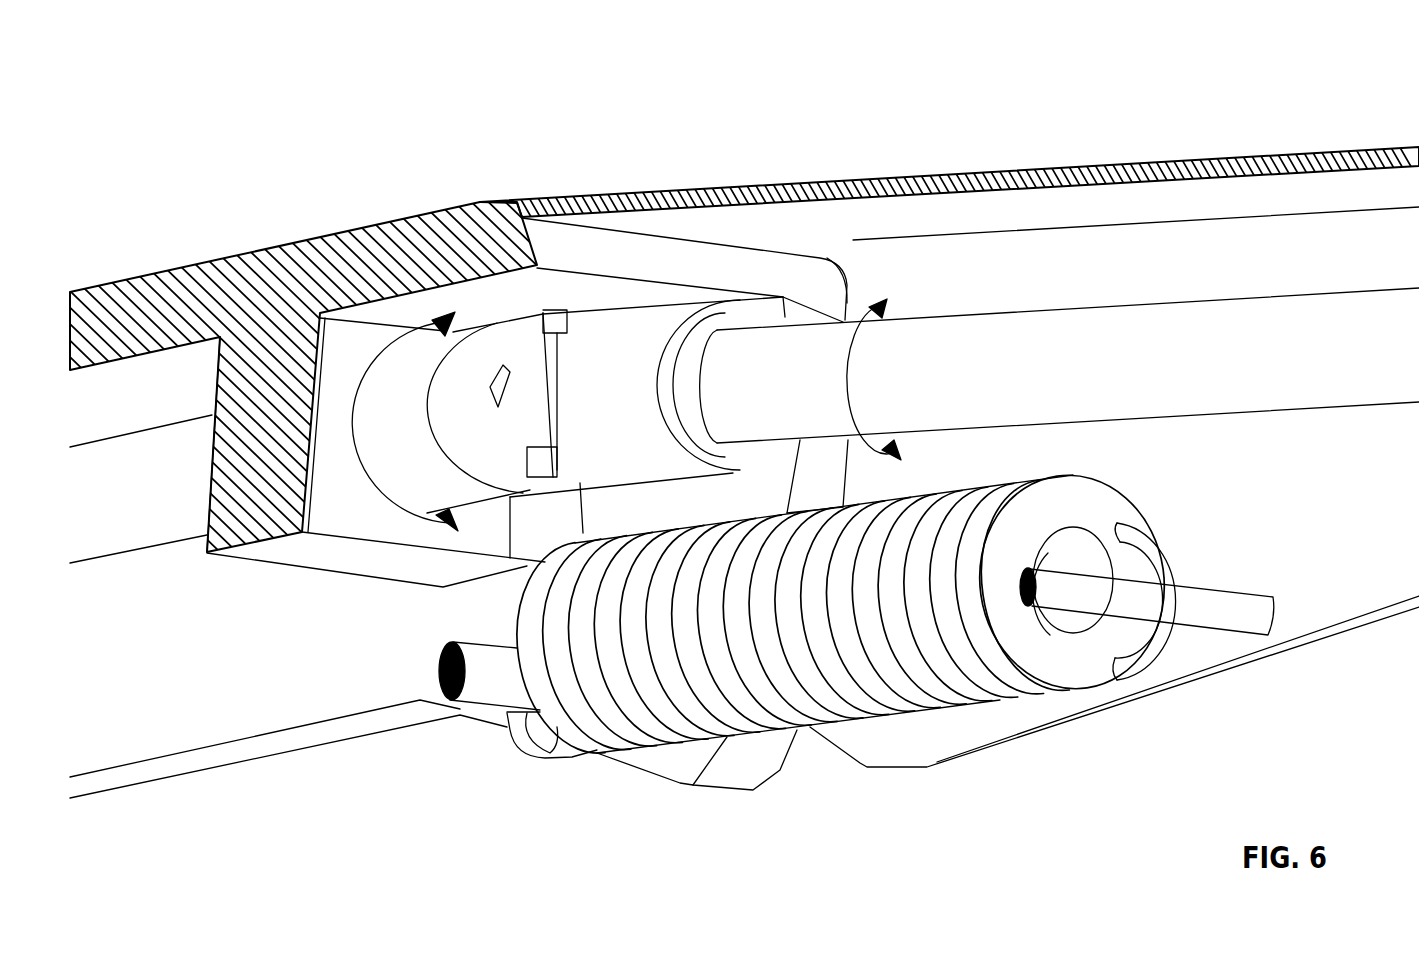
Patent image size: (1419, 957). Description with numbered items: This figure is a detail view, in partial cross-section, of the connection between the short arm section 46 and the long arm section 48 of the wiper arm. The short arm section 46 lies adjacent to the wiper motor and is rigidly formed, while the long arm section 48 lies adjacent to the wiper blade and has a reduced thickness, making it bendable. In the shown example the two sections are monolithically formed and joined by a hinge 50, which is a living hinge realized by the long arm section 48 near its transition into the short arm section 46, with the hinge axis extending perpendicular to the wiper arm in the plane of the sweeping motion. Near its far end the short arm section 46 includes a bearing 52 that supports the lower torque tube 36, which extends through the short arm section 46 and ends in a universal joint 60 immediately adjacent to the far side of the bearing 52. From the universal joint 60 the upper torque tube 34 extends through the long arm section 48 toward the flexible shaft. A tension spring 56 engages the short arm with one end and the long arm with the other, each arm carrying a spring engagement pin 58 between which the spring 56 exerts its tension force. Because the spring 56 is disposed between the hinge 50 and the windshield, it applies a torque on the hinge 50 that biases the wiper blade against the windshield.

The upper torque tube 34 is at (1353, 352).
The lower torque tube 36 is at (175, 483).
The short arm section 46 is at (280, 243).
The long arm section 48 is at (948, 174).
The hinge 50 is at (548, 180).
The bearing 52 is at (265, 490).
The tension spring 56 is at (807, 680).
The spring engagement pin 58 is at (490, 673).
The universal joint 60 is at (523, 480).